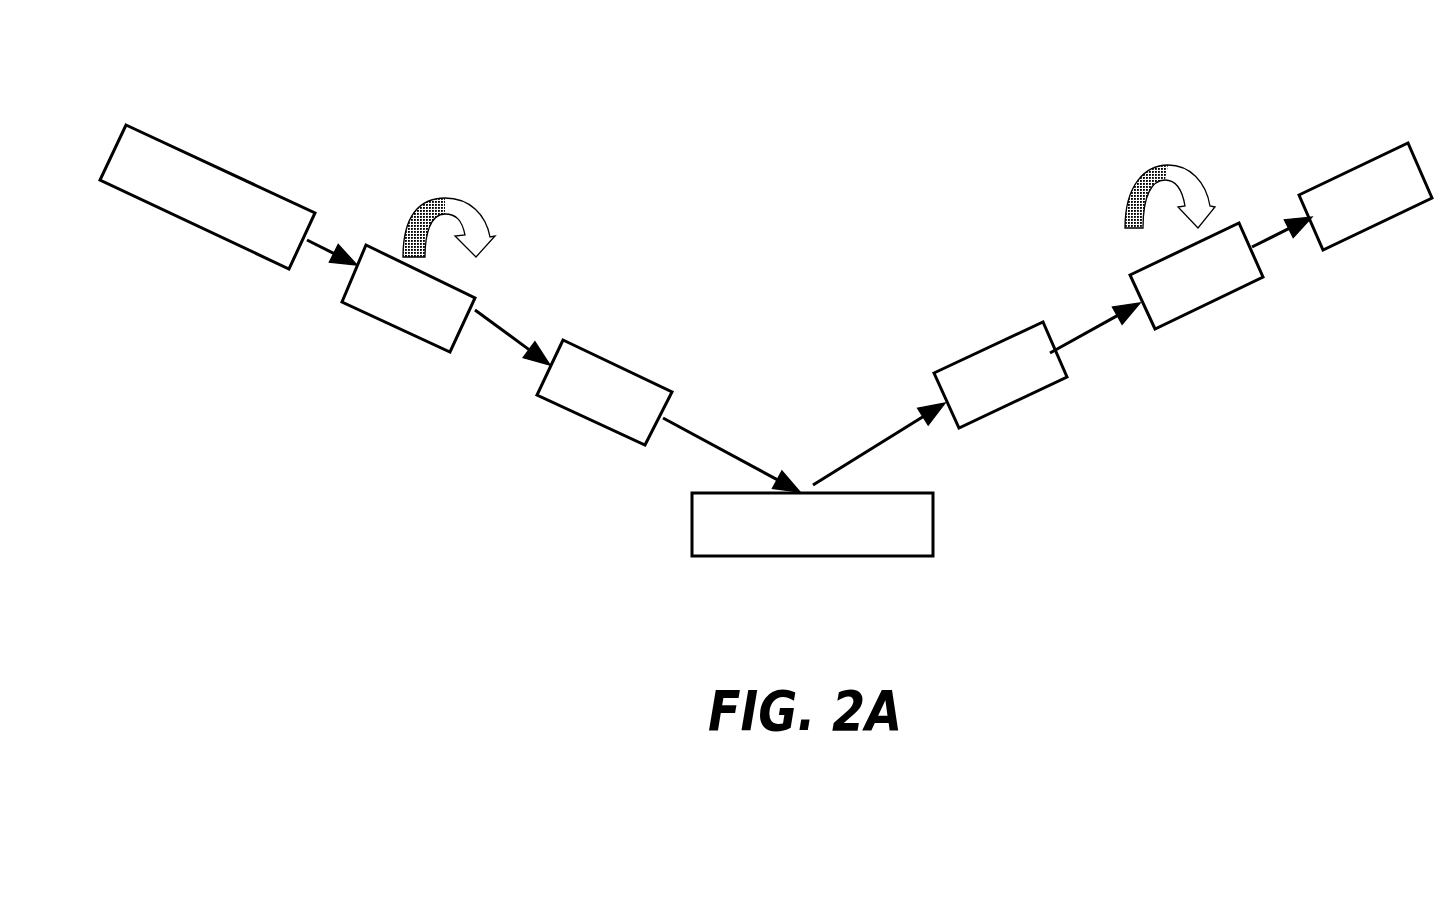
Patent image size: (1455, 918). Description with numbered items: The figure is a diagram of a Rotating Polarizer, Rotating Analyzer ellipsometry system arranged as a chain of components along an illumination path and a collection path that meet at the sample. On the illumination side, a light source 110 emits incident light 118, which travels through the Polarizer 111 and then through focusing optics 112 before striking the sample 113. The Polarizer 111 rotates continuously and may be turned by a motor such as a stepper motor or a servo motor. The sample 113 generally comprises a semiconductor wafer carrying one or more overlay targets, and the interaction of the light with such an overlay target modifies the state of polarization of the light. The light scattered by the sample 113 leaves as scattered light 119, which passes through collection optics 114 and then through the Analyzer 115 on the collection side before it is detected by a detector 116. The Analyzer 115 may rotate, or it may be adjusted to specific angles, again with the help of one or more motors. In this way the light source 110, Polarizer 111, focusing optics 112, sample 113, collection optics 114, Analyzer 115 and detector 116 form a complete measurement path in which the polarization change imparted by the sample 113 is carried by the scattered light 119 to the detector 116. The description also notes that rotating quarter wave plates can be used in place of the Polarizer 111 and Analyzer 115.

The light source 110 is at (204, 147).
The Polarizer 111 is at (373, 240).
The focusing optics 112 is at (593, 350).
The sample 113 is at (876, 560).
The collection optics 114 is at (1006, 424).
The Analyzer 115 is at (1183, 318).
The detector 116 is at (1358, 246).
The incident light 118 is at (680, 435).
The scattered light 119 is at (878, 434).